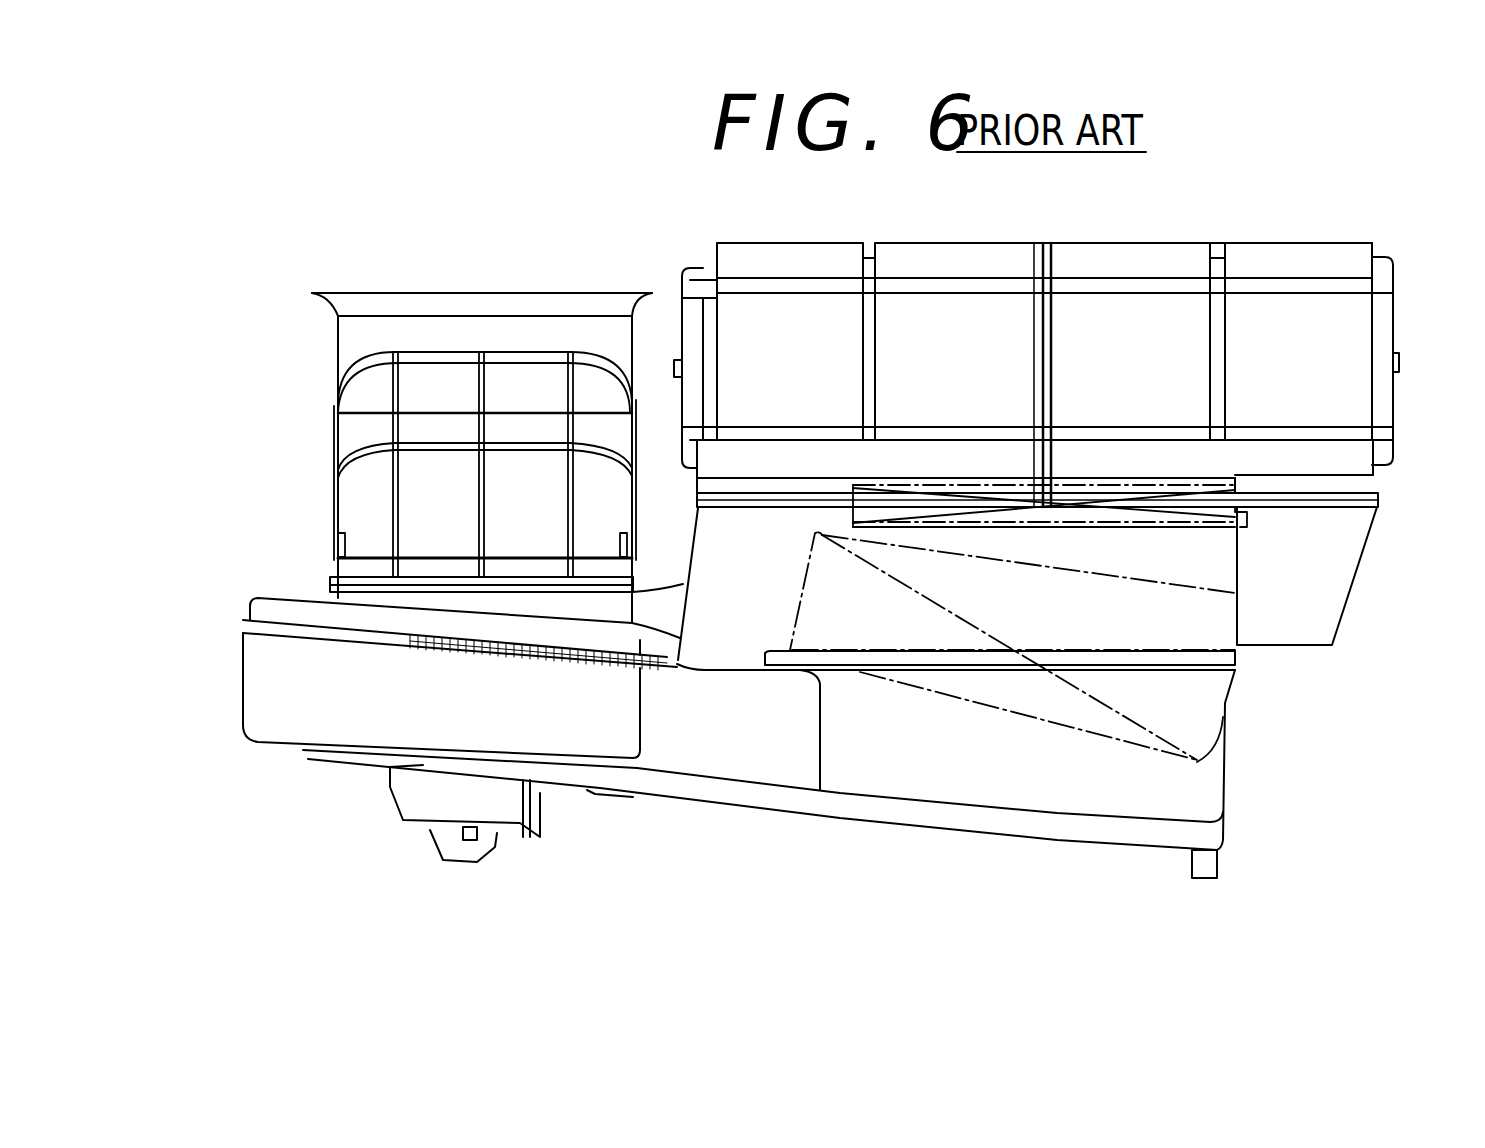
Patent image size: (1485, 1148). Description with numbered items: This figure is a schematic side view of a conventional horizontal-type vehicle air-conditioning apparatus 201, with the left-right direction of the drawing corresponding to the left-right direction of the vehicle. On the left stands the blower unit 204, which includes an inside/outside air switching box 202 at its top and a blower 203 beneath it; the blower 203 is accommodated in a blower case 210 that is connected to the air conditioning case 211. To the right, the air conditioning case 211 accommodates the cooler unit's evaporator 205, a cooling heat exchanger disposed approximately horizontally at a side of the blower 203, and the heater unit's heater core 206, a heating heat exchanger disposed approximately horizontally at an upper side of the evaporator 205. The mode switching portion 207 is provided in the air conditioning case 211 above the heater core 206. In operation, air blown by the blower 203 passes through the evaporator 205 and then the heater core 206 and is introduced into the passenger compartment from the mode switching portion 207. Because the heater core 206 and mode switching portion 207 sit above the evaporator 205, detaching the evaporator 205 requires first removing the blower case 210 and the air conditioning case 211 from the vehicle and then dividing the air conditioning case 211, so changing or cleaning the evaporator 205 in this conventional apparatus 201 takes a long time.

The air-conditioning apparatus 201 is at (626, 271).
The inside/outside air switching box 202 is at (356, 341).
The blower 203 is at (360, 768).
The blower unit 204 is at (374, 281).
The evaporator 205 is at (1200, 728).
The heater core 206 is at (1173, 527).
The mode switching portion 207 is at (1393, 310).
The blower case 210 is at (287, 715).
The air conditioning case 211 is at (1312, 605).